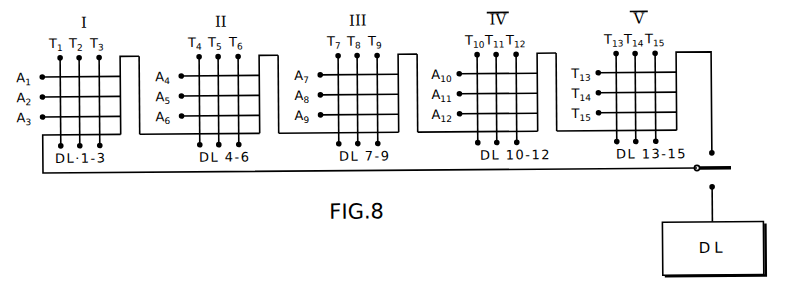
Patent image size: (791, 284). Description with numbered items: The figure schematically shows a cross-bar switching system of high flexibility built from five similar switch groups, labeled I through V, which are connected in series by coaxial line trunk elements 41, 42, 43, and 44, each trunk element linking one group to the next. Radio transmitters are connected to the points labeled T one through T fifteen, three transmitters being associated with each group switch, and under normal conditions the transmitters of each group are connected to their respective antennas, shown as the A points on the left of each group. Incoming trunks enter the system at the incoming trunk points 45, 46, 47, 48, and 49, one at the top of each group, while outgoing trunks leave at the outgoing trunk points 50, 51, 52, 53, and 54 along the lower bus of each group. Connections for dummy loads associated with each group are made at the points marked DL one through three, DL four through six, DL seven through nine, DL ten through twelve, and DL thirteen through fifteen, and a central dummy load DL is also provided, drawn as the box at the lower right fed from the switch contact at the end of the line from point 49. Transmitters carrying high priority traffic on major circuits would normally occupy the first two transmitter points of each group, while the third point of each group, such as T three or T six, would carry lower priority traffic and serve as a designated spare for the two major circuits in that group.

The coaxial line trunk element 41 is at (141, 69).
The coaxial line trunk element 42 is at (280, 68).
The coaxial line trunk element 43 is at (419, 68).
The coaxial line trunk element 44 is at (558, 68).
The incoming trunk point 45 is at (124, 58).
The incoming trunk point 46 is at (263, 58).
The incoming trunk point 47 is at (402, 58).
The incoming trunk point 48 is at (541, 58).
The incoming trunk point 49 is at (680, 58).
The outgoing trunk point 50 is at (42, 136).
The outgoing trunk point 51 is at (182, 136).
The outgoing trunk point 52 is at (322, 136).
The outgoing trunk point 53 is at (462, 136).
The outgoing trunk point 54 is at (600, 136).